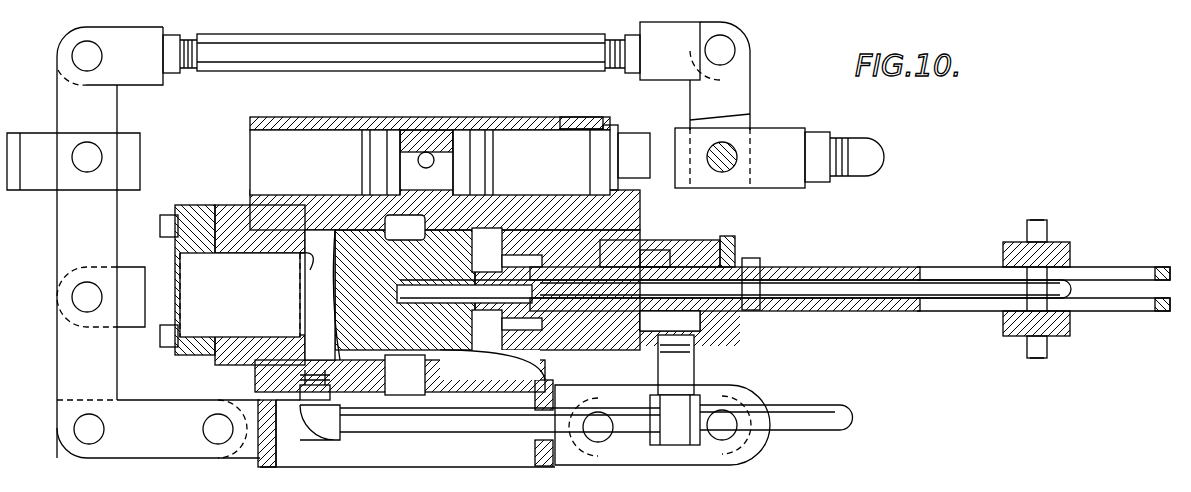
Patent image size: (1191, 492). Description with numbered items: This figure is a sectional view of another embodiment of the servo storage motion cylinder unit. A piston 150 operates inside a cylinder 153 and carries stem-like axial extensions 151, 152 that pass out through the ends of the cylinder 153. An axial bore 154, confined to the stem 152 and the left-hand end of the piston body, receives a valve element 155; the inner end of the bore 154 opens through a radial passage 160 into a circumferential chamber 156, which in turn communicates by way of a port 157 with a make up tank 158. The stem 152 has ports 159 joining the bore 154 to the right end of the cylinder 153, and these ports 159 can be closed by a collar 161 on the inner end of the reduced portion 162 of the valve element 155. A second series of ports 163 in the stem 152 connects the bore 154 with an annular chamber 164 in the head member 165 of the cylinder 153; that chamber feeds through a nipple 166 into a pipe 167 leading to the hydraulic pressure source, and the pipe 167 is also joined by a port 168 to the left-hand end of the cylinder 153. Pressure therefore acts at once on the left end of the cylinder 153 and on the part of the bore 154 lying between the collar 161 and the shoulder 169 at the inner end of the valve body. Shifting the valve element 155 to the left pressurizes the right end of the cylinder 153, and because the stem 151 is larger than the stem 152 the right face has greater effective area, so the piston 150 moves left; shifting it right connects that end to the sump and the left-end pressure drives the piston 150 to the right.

The piston 150 is at (362, 267).
The axial extension 151 is at (248, 307).
The axial extension 152 is at (832, 266).
The cylinder 153 is at (487, 352).
The axial bore 154 is at (338, 295).
The valve element 155 is at (958, 292).
The circumferential chamber 156 is at (422, 393).
The port 157 is at (405, 397).
The make up tank 158 is at (285, 455).
The ports 159 is at (530, 300).
The radial passage 160 is at (382, 322).
The collar 161 is at (548, 295).
The reduced portion 162 is at (758, 285).
The ports 163 is at (664, 262).
The annular chamber 164 is at (690, 332).
The head member 165 is at (702, 246).
The nipple 166 is at (674, 378).
The pipe 167 is at (806, 416).
The port 168 is at (302, 270).
The shoulder 169 is at (782, 290).